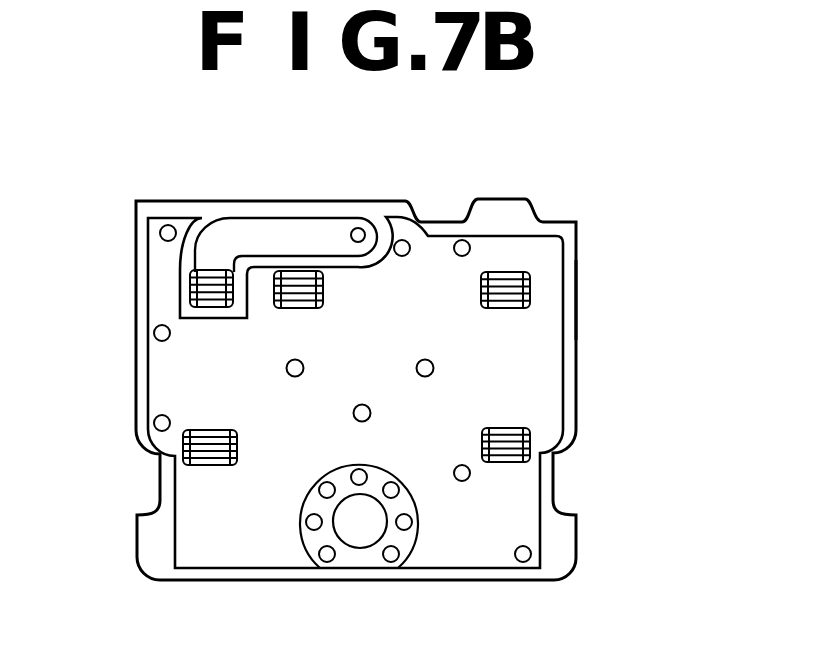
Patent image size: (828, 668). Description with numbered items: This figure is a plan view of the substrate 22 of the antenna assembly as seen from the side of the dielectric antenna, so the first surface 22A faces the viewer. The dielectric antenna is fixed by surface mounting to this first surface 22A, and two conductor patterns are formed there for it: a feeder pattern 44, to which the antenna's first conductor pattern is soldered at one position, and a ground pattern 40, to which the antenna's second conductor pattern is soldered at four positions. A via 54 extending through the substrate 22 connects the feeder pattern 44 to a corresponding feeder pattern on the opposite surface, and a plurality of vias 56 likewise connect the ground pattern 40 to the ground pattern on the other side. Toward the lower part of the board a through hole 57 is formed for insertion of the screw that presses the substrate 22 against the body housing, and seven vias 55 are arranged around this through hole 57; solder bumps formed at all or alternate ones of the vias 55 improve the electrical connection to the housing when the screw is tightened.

The substrate 22 is at (578, 247).
The first surface 22A is at (575, 297).
The ground pattern 40 is at (540, 378).
The feeder pattern 44 is at (258, 232).
The via 54 is at (358, 227).
The vias 55 is at (307, 518).
The vias 56 is at (416, 367).
The through hole 57 is at (360, 537).